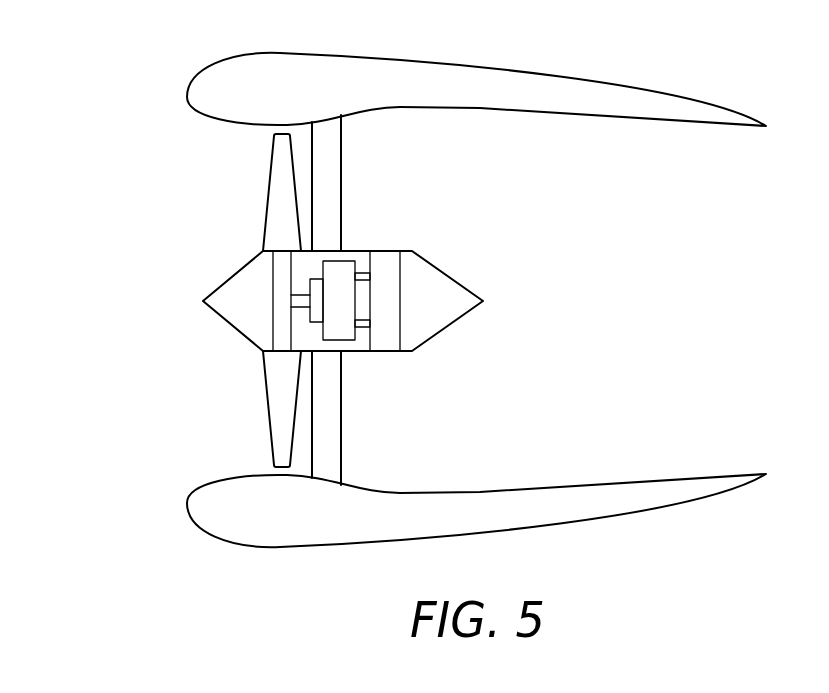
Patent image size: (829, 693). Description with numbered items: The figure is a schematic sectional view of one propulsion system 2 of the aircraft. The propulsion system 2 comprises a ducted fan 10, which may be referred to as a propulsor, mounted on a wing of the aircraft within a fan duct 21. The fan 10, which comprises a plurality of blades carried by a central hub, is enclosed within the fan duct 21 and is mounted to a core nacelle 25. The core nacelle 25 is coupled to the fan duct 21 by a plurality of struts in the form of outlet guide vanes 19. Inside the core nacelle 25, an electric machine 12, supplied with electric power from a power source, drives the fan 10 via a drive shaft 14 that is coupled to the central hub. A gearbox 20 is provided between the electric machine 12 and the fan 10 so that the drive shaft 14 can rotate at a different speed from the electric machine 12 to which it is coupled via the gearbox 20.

The propulsion system 2 is at (133, 188).
The ducted fan 10 is at (270, 414).
The electric machine 12 is at (350, 312).
The drive shaft 14 is at (303, 294).
The outlet guide vanes 19 is at (341, 174).
The gearbox 20 is at (292, 314).
The fan duct 21 is at (303, 76).
The core nacelle 25 is at (455, 278).